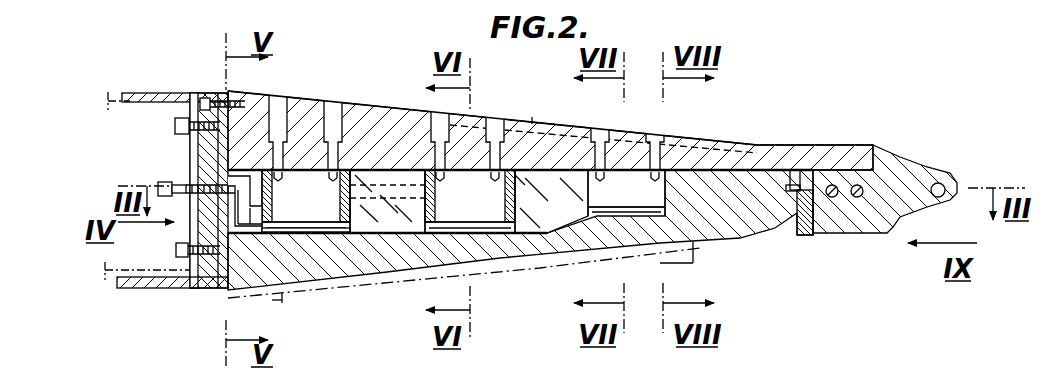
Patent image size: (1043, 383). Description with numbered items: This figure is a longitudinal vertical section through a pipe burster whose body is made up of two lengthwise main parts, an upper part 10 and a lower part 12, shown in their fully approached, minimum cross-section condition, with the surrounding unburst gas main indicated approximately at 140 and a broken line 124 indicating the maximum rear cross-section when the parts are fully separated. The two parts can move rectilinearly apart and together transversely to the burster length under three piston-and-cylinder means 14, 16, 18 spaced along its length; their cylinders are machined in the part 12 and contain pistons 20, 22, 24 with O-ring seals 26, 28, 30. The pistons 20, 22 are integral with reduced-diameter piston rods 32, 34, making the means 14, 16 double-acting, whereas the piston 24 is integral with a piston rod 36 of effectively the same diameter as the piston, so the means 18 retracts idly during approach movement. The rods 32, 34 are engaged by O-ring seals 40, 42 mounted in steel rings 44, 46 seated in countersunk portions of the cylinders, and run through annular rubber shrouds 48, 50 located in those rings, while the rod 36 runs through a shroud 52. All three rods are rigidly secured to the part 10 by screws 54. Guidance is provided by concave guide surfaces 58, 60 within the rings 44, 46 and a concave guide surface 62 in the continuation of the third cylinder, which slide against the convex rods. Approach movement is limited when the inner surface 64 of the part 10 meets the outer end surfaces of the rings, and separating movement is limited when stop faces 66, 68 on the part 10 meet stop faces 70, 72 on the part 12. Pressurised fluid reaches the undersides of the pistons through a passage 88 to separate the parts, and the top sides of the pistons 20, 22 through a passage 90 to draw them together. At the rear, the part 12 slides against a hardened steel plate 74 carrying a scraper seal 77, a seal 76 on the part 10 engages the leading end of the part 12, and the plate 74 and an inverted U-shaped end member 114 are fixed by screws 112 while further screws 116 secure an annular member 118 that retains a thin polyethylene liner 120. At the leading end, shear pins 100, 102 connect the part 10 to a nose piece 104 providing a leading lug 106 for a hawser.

The upper main part 10 is at (360, 110).
The lower main part 12 is at (331, 286).
The piston-and-cylinder means 14 is at (351, 208).
The piston-and-cylinder means 16 is at (510, 196).
The piston-and-cylinder means 18 is at (668, 193).
The piston 20 is at (305, 234).
The piston 22 is at (441, 236).
The piston 24 is at (617, 214).
The O-ring seal 26 is at (258, 233).
The O-ring seal 28 is at (416, 235).
The O-ring seal 30 is at (583, 206).
The piston rod 32 is at (282, 200).
The piston rod 34 is at (439, 200).
The piston rod 36 is at (648, 218).
The O-ring seal 40 is at (224, 184).
The O-ring seal 42 is at (462, 180).
The steel ring 44 is at (342, 148).
The steel ring 46 is at (431, 170).
The annular rubber shroud 48 is at (262, 158).
The annular rubber shroud 50 is at (515, 150).
The shroud 52 is at (697, 142).
The screws 54 is at (283, 142).
The concave guide surface 58 is at (344, 216).
The concave guide surface 60 is at (500, 195).
The concave guide surface 62 is at (598, 190).
The inner surface 64 is at (560, 142).
The stop face 66 is at (188, 252).
The stop face 68 is at (803, 215).
The stop face 70 is at (218, 212).
The stop face 72 is at (795, 186).
The hardened steel plate 74 is at (219, 289).
The seal 76 is at (811, 215).
The scraper seal 77 is at (192, 285).
The passage 88 is at (369, 235).
The passage 90 is at (385, 198).
The shear pin 100 is at (833, 185).
The shear pin 102 is at (858, 185).
The nose piece 104 is at (842, 223).
The leading lug 106 is at (924, 172).
The screws 112 is at (212, 96).
The end member 114 is at (162, 281).
The screws 116 is at (176, 125).
The annular member 118 is at (173, 92).
The liner 120 is at (131, 92).
The broken line 124 is at (280, 300).
The unburst gas main 140 is at (607, 122).